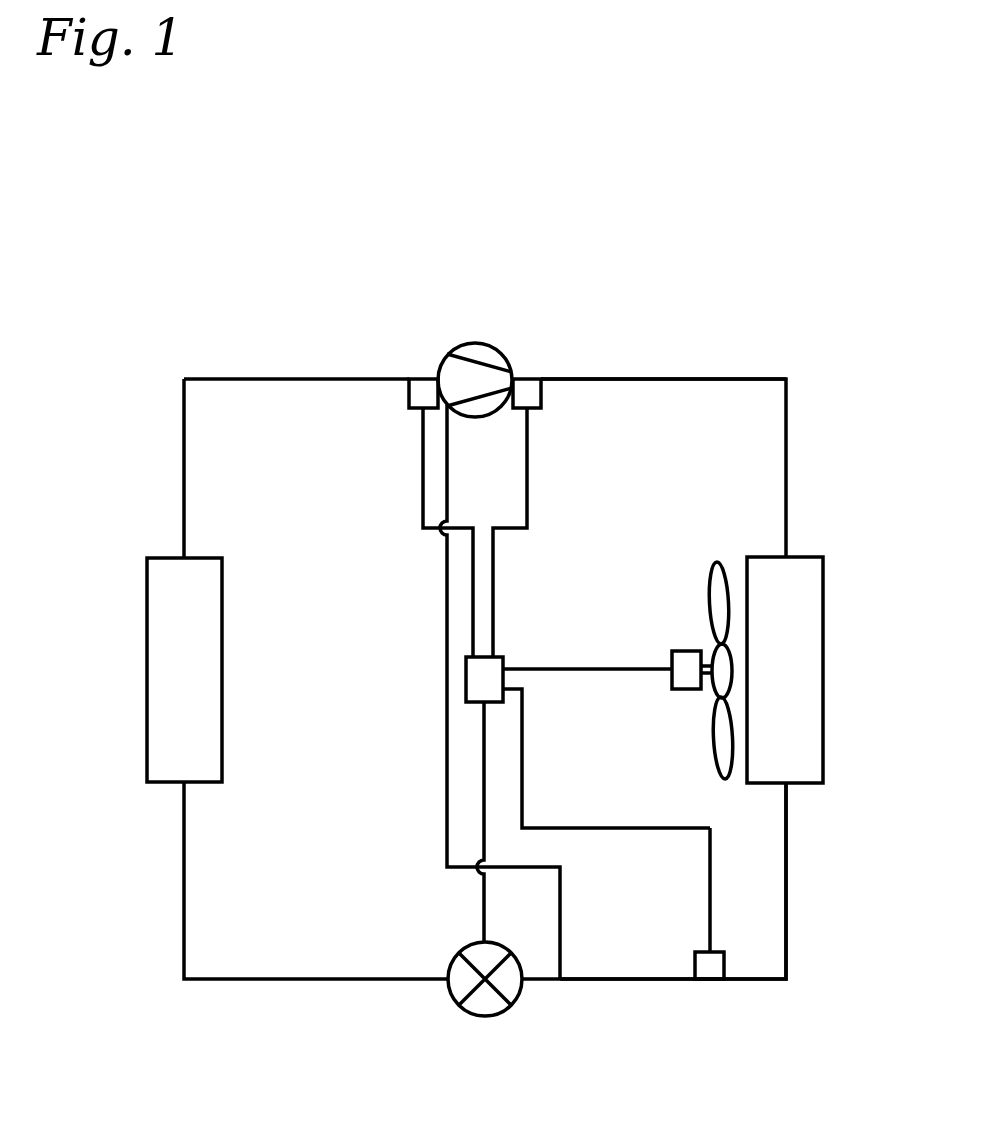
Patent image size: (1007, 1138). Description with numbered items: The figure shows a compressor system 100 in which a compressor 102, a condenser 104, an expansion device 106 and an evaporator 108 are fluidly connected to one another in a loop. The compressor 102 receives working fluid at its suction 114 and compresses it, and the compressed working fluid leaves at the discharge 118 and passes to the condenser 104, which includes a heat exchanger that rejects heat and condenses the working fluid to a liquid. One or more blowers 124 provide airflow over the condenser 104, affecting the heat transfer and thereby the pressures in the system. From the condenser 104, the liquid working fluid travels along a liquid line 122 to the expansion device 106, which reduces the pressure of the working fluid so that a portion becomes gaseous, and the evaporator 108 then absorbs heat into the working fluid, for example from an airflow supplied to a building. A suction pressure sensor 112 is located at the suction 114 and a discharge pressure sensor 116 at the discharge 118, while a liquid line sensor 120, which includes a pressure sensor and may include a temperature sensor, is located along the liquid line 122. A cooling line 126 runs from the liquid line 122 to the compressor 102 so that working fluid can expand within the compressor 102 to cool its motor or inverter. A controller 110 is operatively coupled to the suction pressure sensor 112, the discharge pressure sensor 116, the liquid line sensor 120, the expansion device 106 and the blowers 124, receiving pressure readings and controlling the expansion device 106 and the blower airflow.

The compressor system 100 is at (748, 200).
The compressor 102 is at (492, 342).
The condenser 104 is at (823, 592).
The expansion device 106 is at (470, 1016).
The evaporator 108 is at (147, 585).
The controller 110 is at (500, 657).
The suction pressure sensor 112 is at (409, 398).
The suction 114 is at (438, 378).
The discharge pressure sensor 116 is at (541, 397).
The discharge 118 is at (513, 378).
The liquid line sensor 120 is at (695, 966).
The liquid line 122 is at (786, 981).
The blower 124 is at (713, 574).
The cooling line 126 is at (447, 763).